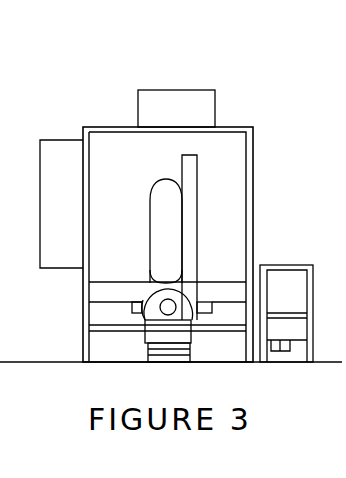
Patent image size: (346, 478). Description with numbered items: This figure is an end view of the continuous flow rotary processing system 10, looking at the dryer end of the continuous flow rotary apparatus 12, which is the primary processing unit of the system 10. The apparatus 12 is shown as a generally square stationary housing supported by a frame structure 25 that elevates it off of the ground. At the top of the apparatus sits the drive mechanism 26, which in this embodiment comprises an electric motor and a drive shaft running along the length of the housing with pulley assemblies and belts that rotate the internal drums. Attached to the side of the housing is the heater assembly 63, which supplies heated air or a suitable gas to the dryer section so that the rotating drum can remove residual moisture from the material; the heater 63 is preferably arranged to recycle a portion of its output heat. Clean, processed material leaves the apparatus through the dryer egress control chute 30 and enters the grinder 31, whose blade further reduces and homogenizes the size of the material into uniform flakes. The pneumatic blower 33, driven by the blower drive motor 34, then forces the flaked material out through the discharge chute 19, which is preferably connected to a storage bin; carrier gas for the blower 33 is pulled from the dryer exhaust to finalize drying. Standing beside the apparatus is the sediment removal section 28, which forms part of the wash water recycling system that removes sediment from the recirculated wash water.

The continuous flow rotary processing system 10 is at (163, 194).
The continuous flow rotary apparatus 12 is at (128, 162).
The discharge chute 19 is at (190, 152).
The frame structure 25 is at (81, 337).
The drive mechanism 26 is at (191, 103).
The sediment removal section 28 is at (288, 264).
The egress control chute 30 is at (158, 233).
The grinder 31 is at (205, 308).
The pneumatic blower 33 is at (150, 296).
The blower drive motor 34 is at (172, 312).
The heater assembly 63 is at (63, 152).